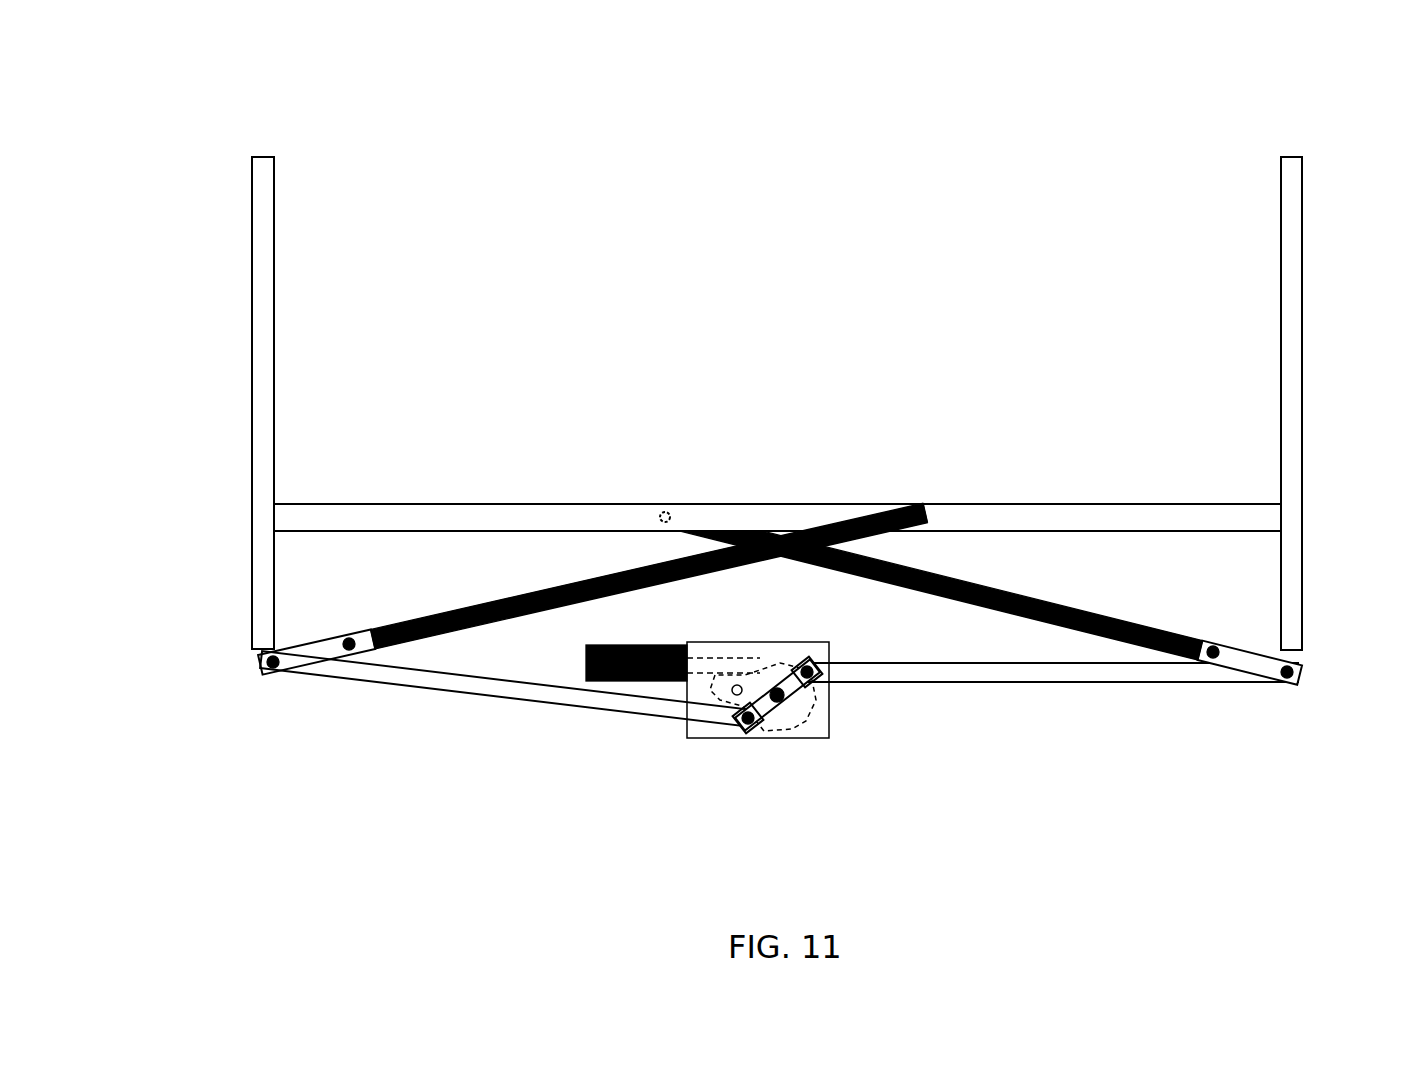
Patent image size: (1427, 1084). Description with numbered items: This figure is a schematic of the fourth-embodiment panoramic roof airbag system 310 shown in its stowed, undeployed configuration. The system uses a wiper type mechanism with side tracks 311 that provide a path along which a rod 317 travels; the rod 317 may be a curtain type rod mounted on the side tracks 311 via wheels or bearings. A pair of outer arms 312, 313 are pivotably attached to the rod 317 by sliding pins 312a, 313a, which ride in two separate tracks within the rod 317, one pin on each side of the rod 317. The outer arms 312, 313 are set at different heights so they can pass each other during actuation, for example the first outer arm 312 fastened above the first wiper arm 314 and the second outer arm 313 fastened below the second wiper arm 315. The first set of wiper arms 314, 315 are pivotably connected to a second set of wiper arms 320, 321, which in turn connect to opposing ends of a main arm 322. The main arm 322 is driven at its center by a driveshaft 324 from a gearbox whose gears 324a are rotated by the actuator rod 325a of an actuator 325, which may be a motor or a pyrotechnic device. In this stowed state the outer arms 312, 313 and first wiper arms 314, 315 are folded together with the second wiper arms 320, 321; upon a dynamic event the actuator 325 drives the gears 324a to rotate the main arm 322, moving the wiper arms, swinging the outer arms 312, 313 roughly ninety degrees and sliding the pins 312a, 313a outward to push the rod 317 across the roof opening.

The panoramic roof airbag system 310 is at (382, 118).
The side tracks 311 is at (250, 388).
The first outer arm 312 is at (563, 585).
The sliding pin 312a is at (903, 508).
The second outer arm 313 is at (985, 585).
The sliding pin 313a is at (662, 513).
The first wiper arm 314 is at (313, 638).
The second wiper arm 315 is at (1226, 643).
The rod 317 is at (1050, 505).
The second wiper arm 320 is at (415, 690).
The second wiper arm 321 is at (1052, 683).
The main arm 322 is at (772, 738).
The driveshaft 324 is at (783, 698).
The gears 324a is at (738, 673).
The actuator 325 is at (636, 646).
The actuator rod 325a is at (720, 650).